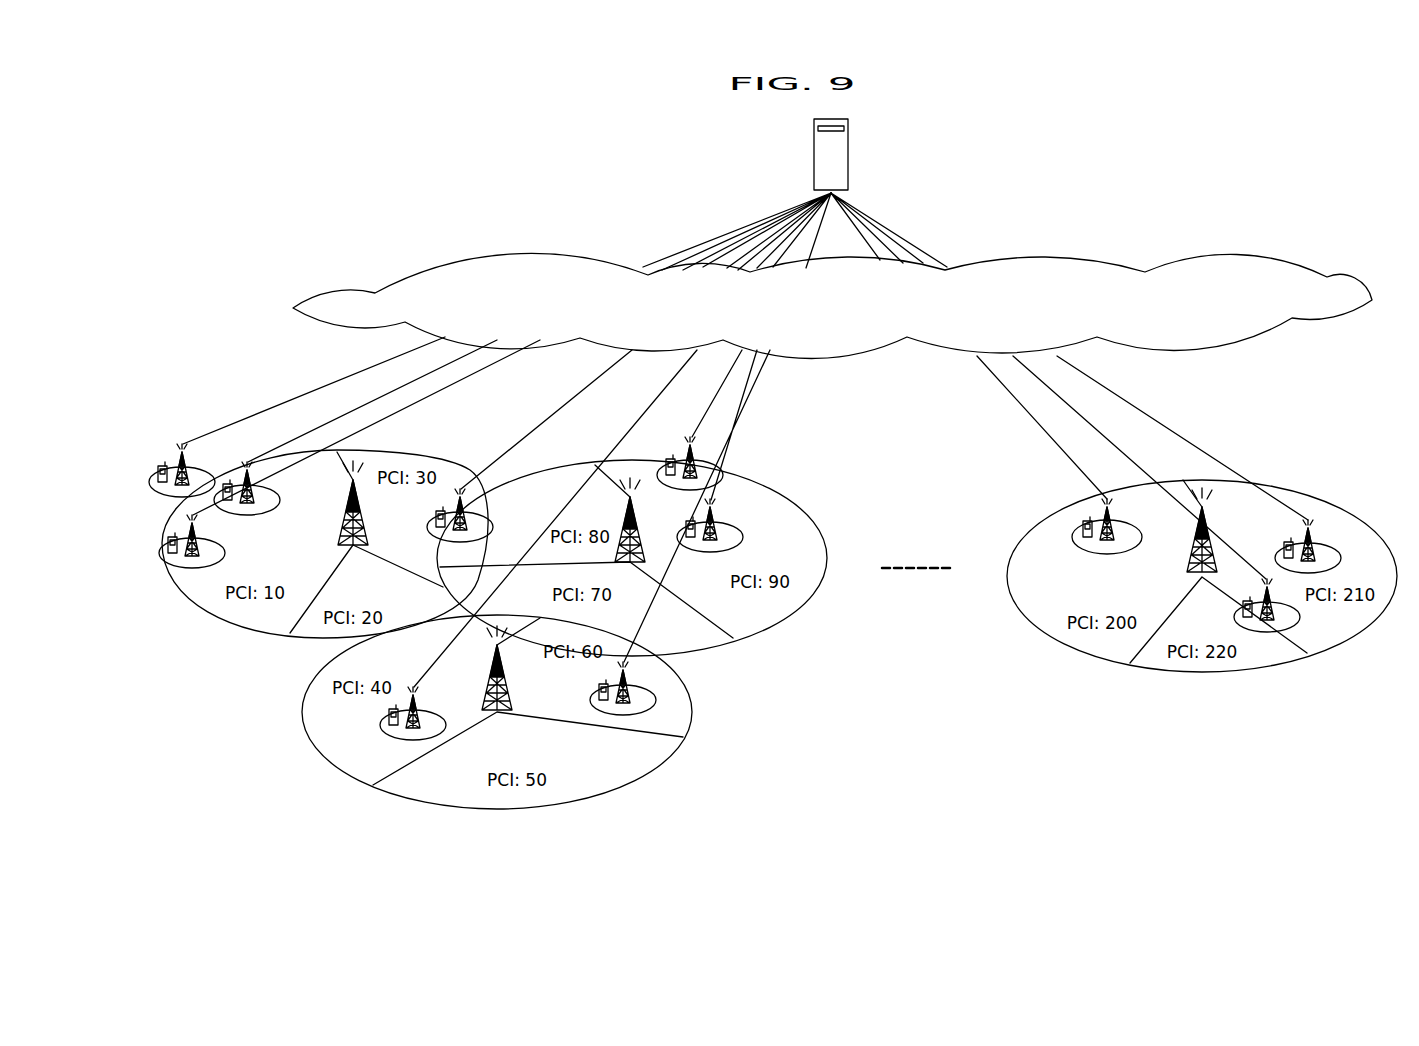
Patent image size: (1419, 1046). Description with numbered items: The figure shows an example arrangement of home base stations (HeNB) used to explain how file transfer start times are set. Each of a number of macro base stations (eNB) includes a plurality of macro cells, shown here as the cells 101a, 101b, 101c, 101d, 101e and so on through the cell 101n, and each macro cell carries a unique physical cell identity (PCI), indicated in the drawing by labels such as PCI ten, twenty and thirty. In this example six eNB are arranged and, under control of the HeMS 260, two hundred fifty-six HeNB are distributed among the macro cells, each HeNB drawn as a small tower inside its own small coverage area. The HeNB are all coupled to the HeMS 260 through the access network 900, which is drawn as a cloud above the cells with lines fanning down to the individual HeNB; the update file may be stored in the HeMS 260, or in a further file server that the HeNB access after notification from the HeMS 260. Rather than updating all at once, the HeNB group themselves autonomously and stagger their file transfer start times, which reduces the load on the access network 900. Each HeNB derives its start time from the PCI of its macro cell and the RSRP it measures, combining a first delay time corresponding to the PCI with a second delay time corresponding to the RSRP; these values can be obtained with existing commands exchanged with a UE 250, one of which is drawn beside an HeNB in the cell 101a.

The HeMS 260 is at (848, 150).
The access network 900 is at (1222, 262).
The UE 250 is at (163, 489).
The macro cell 101a is at (233, 622).
The macro cell 101b is at (302, 638).
The macro cell 101c is at (466, 466).
The macro cell 101d is at (312, 747).
The macro cell 101e is at (662, 775).
The macro cell 101n is at (1180, 673).